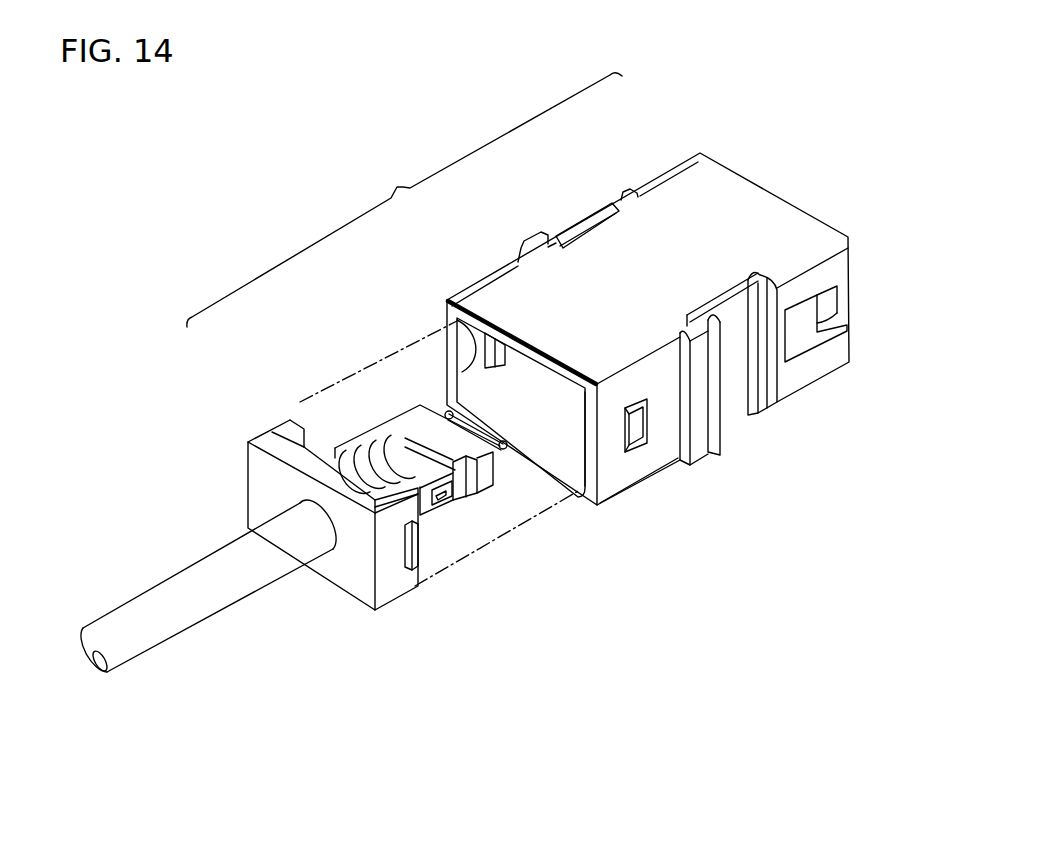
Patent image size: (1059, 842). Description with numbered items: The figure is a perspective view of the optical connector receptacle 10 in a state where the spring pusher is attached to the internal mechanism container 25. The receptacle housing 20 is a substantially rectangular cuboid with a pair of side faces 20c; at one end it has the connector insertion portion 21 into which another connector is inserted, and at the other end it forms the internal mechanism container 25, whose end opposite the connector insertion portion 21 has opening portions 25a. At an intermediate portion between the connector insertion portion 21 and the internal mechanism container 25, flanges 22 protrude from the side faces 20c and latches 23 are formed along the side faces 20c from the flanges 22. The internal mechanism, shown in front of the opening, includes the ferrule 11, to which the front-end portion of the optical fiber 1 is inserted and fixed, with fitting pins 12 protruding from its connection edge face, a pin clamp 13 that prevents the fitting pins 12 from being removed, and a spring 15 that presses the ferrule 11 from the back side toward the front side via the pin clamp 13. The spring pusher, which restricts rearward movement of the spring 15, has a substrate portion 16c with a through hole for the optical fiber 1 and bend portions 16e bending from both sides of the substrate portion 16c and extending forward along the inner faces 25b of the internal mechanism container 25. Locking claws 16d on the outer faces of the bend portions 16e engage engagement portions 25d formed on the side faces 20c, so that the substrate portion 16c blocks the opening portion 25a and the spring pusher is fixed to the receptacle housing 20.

The optical fiber 1 is at (208, 551).
The optical connector receptacle 10 is at (404, 200).
The ferrule 11 is at (393, 423).
The fitting pins 12 is at (504, 450).
The pin clamp 13 is at (447, 508).
The spring 15 is at (363, 463).
The substrate portion 16c is at (327, 570).
The locking claws 16d is at (420, 548).
The bend portions 16e is at (268, 430).
The receptacle housing 20 is at (476, 267).
The side faces 20c is at (632, 465).
The connector insertion portion 21 is at (660, 190).
The flanges 22 is at (527, 238).
The latches 23 is at (582, 222).
The internal mechanism container 25 is at (500, 268).
The opening portions 25a is at (568, 463).
The inner faces 25b is at (470, 370).
The engagement portions 25d is at (455, 327).